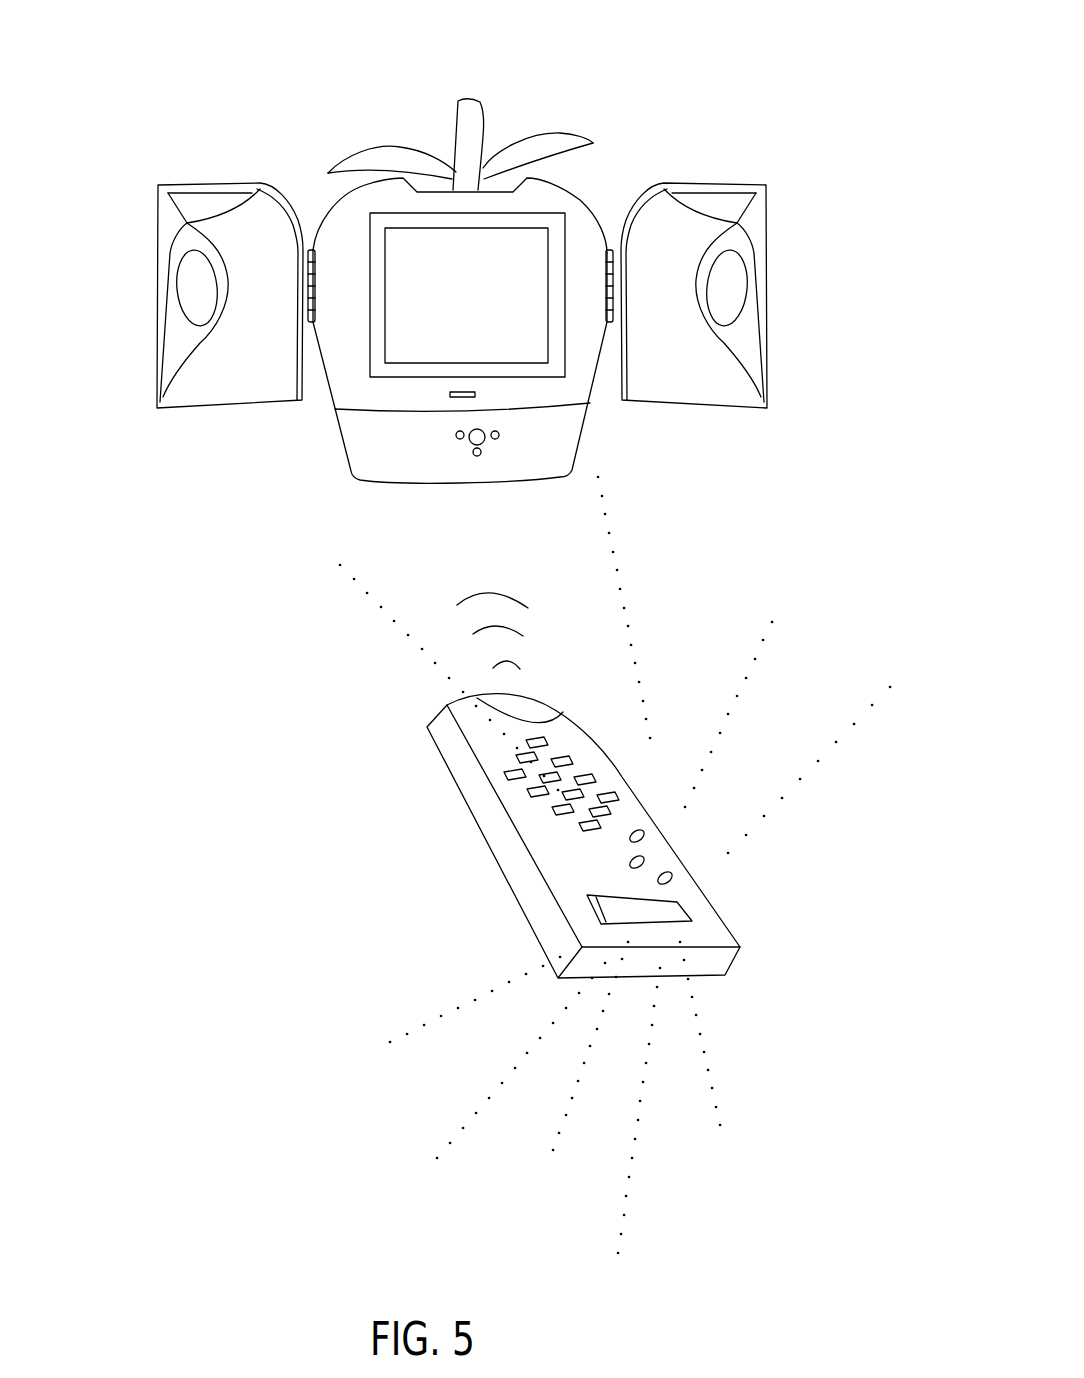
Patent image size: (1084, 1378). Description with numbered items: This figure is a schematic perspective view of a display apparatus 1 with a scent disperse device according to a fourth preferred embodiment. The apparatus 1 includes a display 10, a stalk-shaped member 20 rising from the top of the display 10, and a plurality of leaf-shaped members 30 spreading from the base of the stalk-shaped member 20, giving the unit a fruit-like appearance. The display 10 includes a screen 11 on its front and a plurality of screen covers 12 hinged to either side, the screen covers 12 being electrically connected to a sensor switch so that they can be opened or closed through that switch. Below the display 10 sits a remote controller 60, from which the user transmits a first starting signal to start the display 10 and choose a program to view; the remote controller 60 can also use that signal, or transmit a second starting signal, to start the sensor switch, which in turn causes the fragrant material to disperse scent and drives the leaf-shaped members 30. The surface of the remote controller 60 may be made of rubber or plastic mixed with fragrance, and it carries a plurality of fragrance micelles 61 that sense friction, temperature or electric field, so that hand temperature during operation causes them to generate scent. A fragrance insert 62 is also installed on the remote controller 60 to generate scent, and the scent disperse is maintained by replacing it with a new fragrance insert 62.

The scent disperse display apparatus 1 is at (650, 147).
The display 10 is at (548, 446).
The screen 11 is at (398, 332).
The screen cover 12 is at (203, 387).
The stalk-shaped member 20 is at (473, 117).
The leaf-shaped members 30 is at (365, 158).
The remote controller 60 is at (455, 752).
The fragrance micelles 61 is at (648, 862).
The fragrance insert 62 is at (610, 903).